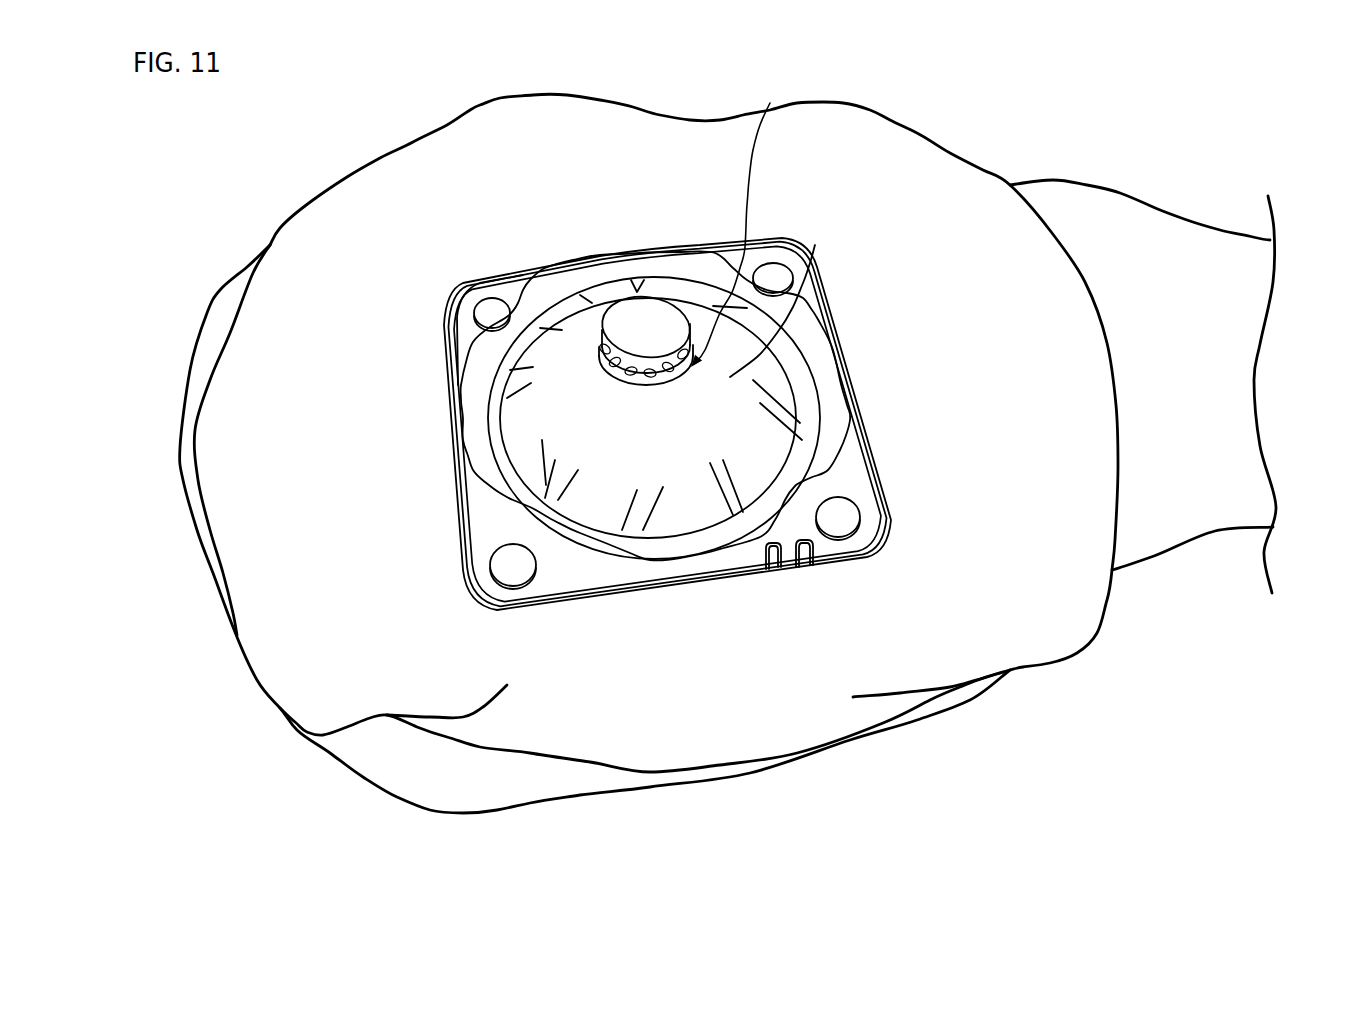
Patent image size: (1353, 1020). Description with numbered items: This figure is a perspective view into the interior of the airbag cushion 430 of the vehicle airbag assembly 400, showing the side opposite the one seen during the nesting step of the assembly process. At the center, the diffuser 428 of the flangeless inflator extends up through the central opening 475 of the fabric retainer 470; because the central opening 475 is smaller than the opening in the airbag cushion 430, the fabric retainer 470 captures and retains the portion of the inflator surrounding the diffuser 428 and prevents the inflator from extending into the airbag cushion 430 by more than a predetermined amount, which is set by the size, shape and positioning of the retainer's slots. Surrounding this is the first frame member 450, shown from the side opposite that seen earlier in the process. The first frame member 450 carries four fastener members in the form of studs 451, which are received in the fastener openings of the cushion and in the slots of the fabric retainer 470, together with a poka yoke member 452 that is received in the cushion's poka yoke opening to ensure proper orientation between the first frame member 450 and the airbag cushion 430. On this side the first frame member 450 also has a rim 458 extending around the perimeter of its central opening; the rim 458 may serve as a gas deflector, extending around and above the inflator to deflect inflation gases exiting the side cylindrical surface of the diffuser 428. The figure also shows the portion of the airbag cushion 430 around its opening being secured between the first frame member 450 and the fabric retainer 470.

The vehicle airbag assembly 400 is at (1104, 110).
The diffuser 428 is at (647, 327).
The airbag cushion 430 is at (497, 435).
The first frame member 450 is at (557, 575).
The studs 451 is at (503, 568).
The poka yoke member 452 is at (785, 555).
The rim 458 is at (570, 290).
The fabric retainer 470 is at (1160, 527).
The central opening 475 is at (623, 170).